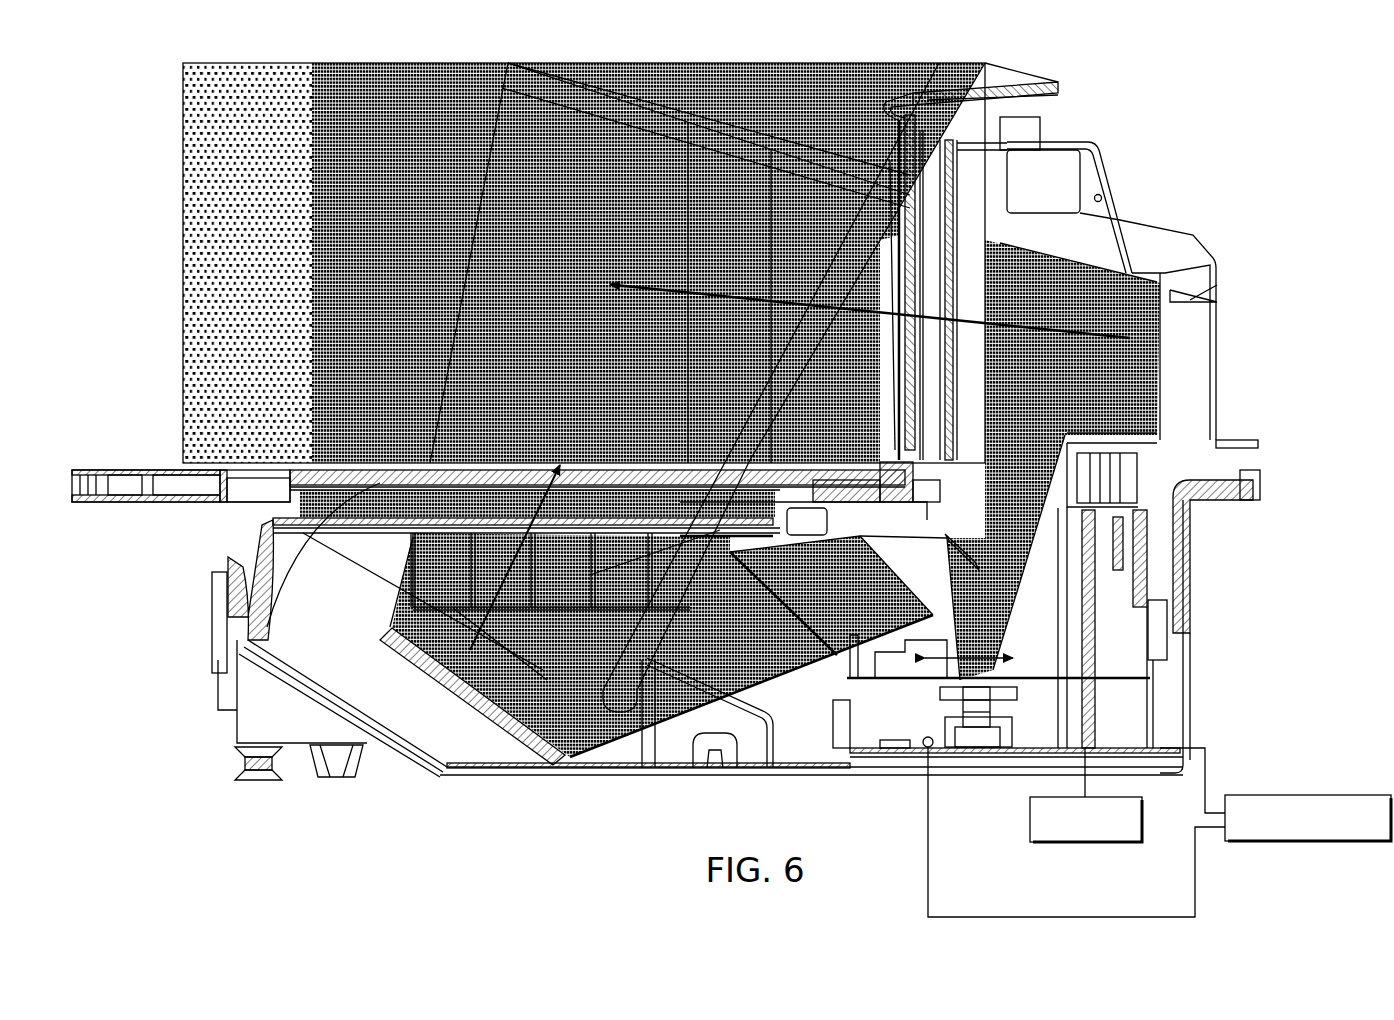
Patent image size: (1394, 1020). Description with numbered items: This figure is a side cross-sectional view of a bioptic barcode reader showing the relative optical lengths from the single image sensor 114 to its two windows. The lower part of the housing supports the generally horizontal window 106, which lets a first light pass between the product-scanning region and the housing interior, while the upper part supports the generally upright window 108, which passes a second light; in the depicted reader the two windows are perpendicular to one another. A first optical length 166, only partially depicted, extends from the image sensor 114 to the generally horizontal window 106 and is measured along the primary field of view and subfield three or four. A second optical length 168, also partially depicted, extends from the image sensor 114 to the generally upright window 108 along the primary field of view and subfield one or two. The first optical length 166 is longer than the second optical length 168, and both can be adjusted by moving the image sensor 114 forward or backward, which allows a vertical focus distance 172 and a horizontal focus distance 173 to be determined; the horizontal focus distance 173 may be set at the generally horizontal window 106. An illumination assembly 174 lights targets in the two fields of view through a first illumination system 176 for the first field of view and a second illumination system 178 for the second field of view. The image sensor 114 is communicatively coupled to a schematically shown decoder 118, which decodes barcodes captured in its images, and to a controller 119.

The generally horizontal window 106 is at (245, 567).
The generally upright window 108 is at (923, 183).
The image sensor 114 is at (982, 752).
The decoder 118 is at (1085, 842).
The controller 119 is at (1308, 842).
The first optical length 166 is at (472, 648).
The second optical length 168 is at (1085, 333).
The vertical focus distance 172 is at (603, 87).
The horizontal focus distance 173 is at (247, 643).
The illumination assembly 174 is at (1106, 172).
The first illumination system 176 is at (923, 755).
The second illumination system 178 is at (1102, 195).